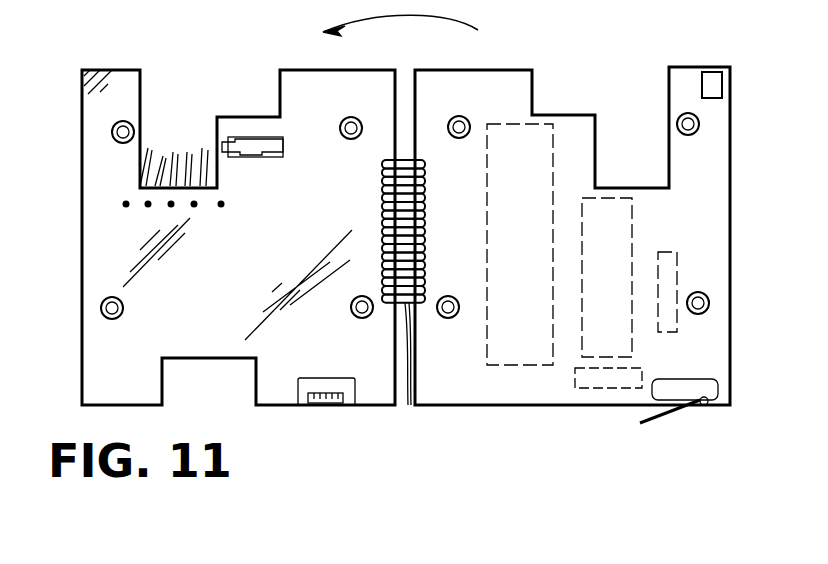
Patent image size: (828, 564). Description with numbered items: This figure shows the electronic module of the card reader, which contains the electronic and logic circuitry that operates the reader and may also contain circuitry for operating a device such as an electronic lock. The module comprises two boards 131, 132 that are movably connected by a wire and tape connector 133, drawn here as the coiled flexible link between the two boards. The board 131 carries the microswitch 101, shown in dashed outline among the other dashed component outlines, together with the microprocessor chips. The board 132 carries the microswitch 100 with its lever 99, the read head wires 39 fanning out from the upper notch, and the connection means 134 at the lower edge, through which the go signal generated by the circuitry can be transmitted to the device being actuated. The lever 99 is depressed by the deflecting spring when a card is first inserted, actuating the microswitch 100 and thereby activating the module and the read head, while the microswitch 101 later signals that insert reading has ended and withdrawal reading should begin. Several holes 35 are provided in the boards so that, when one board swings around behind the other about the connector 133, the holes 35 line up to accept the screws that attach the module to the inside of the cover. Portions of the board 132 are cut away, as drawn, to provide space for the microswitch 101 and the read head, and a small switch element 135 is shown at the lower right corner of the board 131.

The holes 35 is at (113, 140).
The read head wires 39 is at (178, 150).
The lever 99 is at (262, 148).
The microswitch 100 is at (232, 142).
The microswitch 101 is at (600, 385).
The board 131 is at (490, 70).
The board 132 is at (118, 70).
The wire and tape connector 133 is at (407, 405).
The connection means 134 is at (302, 405).
The switch 135 is at (715, 404).